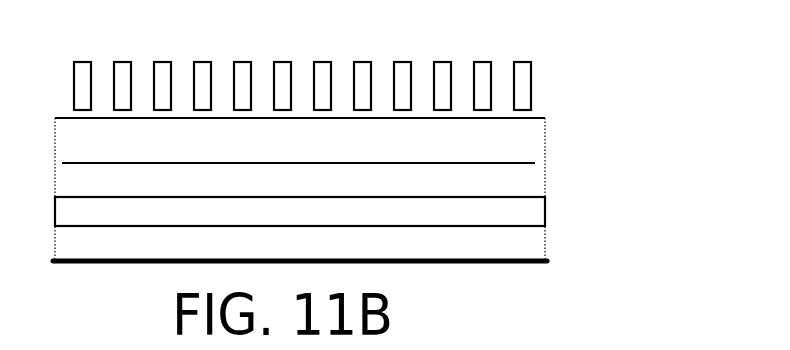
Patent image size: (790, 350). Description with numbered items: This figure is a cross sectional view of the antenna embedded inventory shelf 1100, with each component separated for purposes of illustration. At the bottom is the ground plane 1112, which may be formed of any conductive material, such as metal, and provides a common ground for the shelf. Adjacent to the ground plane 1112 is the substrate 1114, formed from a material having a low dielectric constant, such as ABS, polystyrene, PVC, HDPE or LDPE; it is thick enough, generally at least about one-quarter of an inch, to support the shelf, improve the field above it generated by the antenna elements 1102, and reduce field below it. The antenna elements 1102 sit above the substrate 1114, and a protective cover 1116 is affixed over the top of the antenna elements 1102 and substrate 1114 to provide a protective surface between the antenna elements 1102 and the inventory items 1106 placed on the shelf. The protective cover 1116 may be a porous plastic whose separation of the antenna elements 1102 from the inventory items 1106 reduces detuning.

The antenna embedded inventory shelf 1100 is at (622, 162).
The antenna elements 1102 is at (535, 163).
The inventory items 1106 is at (118, 62).
The ground plane 1112 is at (547, 259).
The substrate 1114 is at (545, 215).
The protective cover 1116 is at (545, 118).